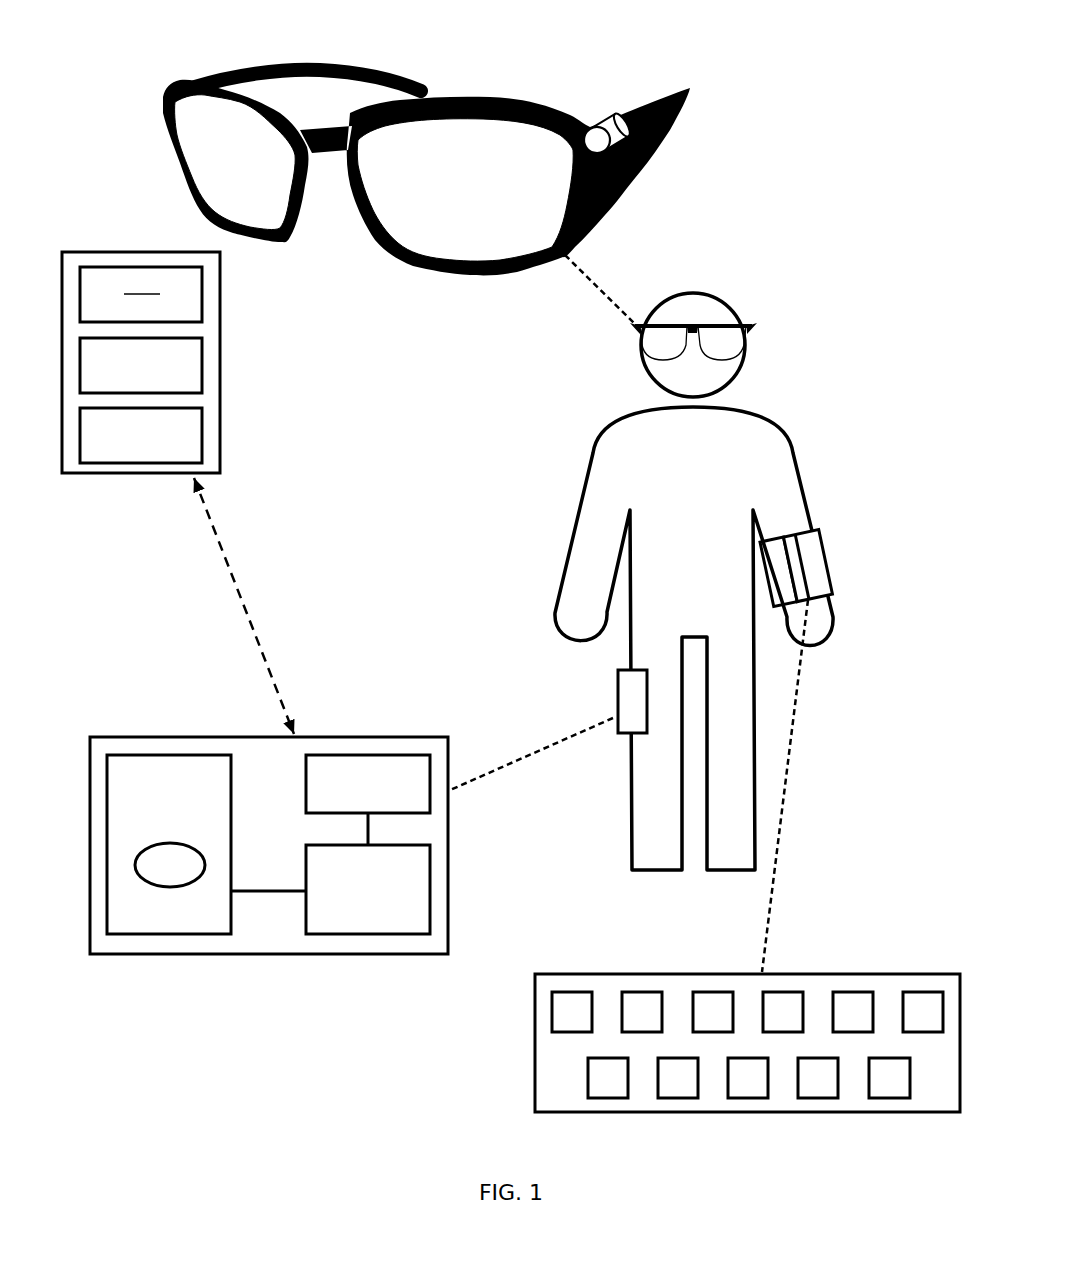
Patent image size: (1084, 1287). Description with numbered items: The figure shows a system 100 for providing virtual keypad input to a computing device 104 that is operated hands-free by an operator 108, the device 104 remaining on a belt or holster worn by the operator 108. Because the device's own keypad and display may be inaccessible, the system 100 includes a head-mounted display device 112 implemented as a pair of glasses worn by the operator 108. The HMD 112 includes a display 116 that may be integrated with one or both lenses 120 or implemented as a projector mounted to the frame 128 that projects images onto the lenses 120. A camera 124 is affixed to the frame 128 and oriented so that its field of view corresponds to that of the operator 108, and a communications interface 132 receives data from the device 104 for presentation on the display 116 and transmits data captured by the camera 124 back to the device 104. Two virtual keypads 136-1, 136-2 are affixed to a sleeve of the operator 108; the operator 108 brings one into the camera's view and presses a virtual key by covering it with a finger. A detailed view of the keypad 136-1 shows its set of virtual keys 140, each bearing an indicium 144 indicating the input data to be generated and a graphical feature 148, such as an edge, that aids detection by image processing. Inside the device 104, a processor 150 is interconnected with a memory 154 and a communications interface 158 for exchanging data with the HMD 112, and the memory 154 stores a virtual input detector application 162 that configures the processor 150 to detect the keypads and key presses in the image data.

The system 100 is at (797, 101).
The computing device 104 is at (139, 732).
The operator 108 is at (782, 433).
The head-mounted display device 112 is at (87, 250).
The display 116 is at (124, 365).
The lenses 120 is at (222, 173).
The camera 124 is at (613, 113).
The frame 128 is at (468, 273).
The communications interface 132 is at (124, 435).
The virtual keypad 136-1 is at (813, 565).
The virtual keypad 136-2 is at (770, 543).
The virtual keys 140 is at (549, 1013).
The indicium 144 is at (573, 997).
The graphical feature 148 is at (565, 992).
The processor 150 is at (350, 888).
The memory 154 is at (152, 784).
The communications interface 158 is at (350, 784).
The virtual input detector application 162 is at (152, 876).